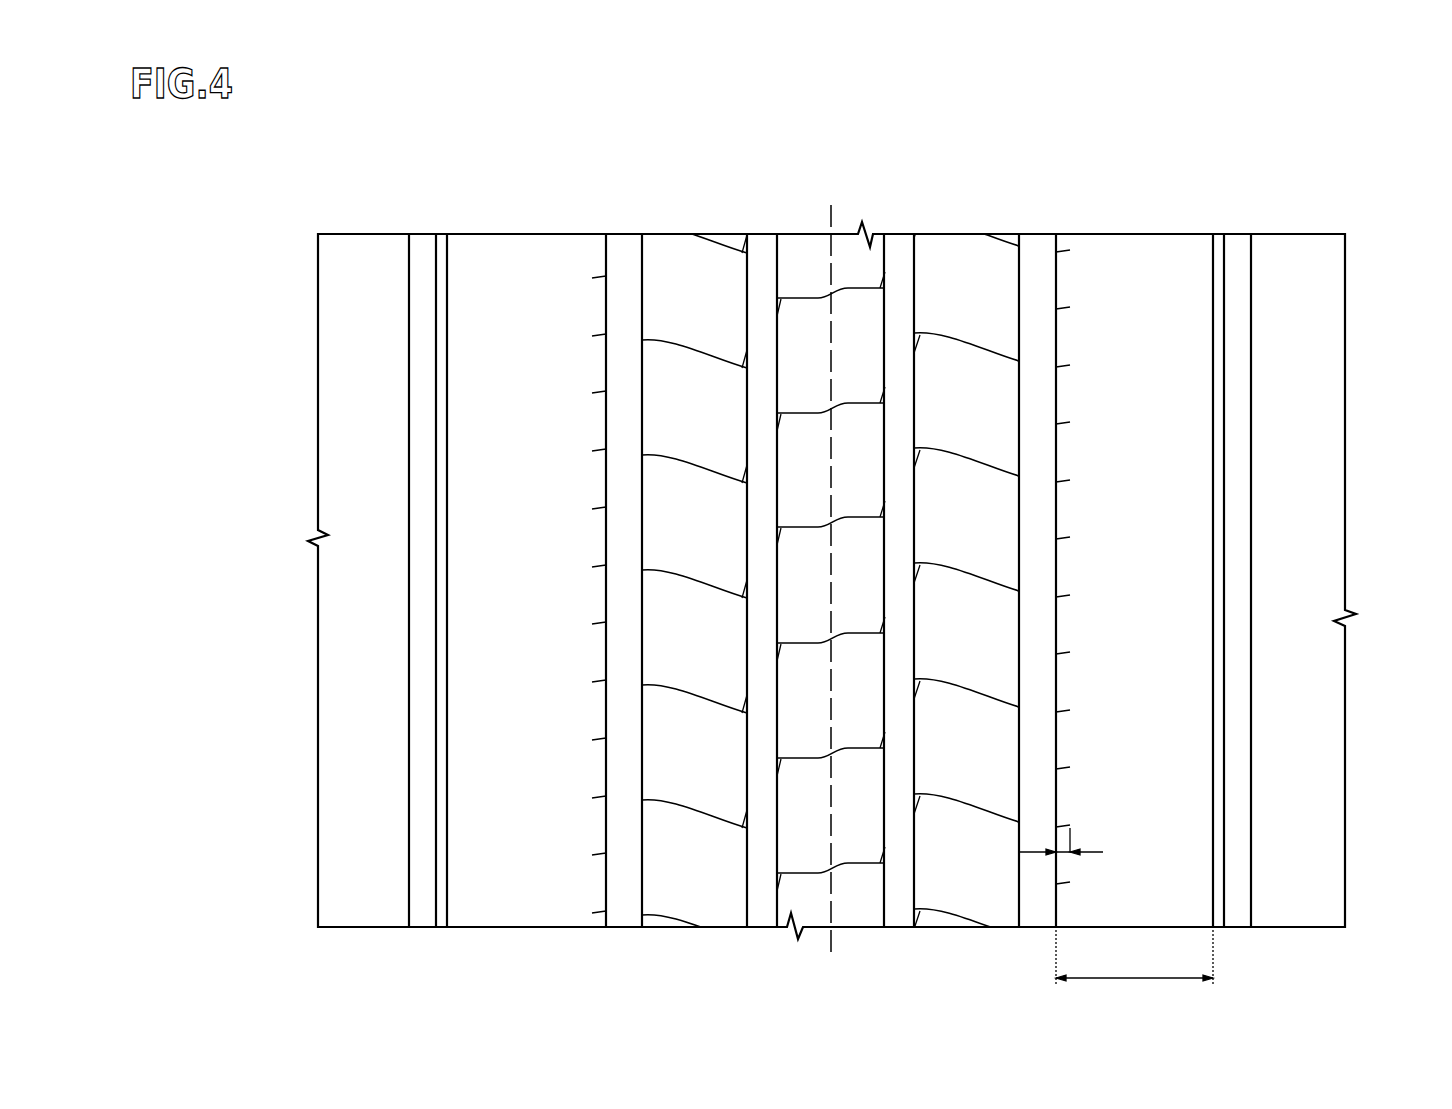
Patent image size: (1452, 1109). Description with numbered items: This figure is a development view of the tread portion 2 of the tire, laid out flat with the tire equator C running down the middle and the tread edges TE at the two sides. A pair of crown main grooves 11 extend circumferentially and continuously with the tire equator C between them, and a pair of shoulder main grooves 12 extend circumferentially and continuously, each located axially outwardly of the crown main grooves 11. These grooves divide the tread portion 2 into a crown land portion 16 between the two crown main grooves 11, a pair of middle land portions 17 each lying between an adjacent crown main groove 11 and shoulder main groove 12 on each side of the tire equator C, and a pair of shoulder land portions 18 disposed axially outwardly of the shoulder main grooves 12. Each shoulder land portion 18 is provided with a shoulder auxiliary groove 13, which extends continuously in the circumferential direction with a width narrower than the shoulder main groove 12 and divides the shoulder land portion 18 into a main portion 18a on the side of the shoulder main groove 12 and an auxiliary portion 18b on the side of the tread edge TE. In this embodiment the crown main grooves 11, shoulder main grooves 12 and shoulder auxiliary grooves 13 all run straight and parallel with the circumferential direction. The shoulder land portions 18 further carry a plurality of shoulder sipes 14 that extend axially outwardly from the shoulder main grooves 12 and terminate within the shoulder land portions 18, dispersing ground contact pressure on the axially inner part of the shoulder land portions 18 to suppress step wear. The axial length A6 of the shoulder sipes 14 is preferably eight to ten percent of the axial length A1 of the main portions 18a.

The tread portion 2 is at (1180, 195).
The tread edge TE is at (408, 323).
The shoulder auxiliary groove 13 is at (440, 268).
The shoulder land portion 18 is at (505, 318).
The main portion 18a is at (1128, 337).
The auxiliary portion 18b is at (1238, 548).
The shoulder main groove 12 is at (618, 282).
The shoulder sipe 14 is at (600, 739).
The middle land portion 17 is at (678, 295).
The crown main groove 11 is at (761, 275).
The crown land portion 16 is at (853, 318).
The tire equator C is at (831, 220).
The axial length of shoulder sipes A6 is at (1068, 852).
The axial length of main portions A1 is at (1134, 957).